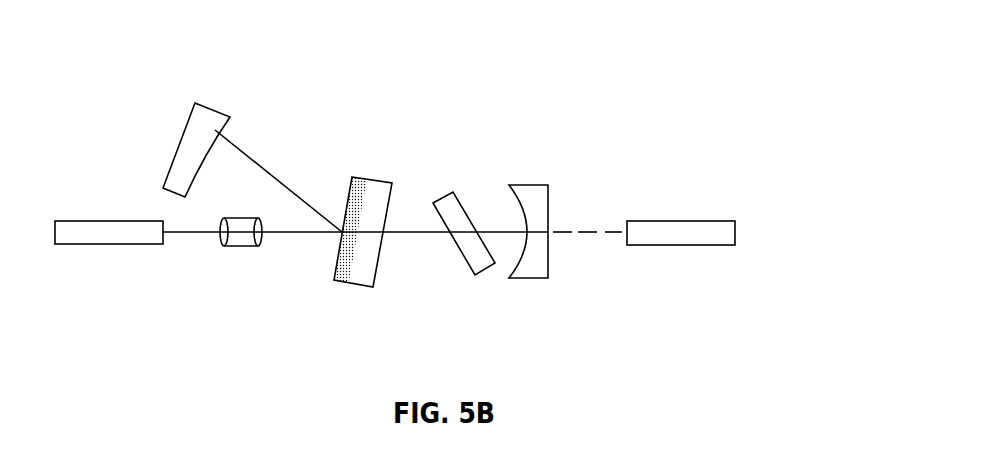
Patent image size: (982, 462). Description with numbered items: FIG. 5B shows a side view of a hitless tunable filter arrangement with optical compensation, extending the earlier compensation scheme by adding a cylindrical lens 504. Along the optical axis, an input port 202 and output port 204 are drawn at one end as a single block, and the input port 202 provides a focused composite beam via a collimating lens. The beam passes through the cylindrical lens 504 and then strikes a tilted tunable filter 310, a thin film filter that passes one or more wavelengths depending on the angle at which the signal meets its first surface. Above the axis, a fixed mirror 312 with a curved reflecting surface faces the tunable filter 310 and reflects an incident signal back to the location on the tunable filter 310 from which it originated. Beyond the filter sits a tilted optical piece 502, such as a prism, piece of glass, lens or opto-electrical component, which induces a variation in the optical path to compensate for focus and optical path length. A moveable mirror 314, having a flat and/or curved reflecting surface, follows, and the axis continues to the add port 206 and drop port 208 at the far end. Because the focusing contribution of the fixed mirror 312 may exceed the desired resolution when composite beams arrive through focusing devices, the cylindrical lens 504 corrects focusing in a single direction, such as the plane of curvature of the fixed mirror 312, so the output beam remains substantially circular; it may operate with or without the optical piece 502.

The input port 202 is at (68, 245).
The output port 204 is at (114, 286).
The cylindrical lens 504 is at (242, 248).
The fixed mirror 312 is at (183, 137).
The tunable filter 310 is at (362, 177).
The optical piece 502 is at (465, 260).
The moveable mirror 314 is at (523, 185).
The add port 206 is at (708, 221).
The drop port 208 is at (727, 199).